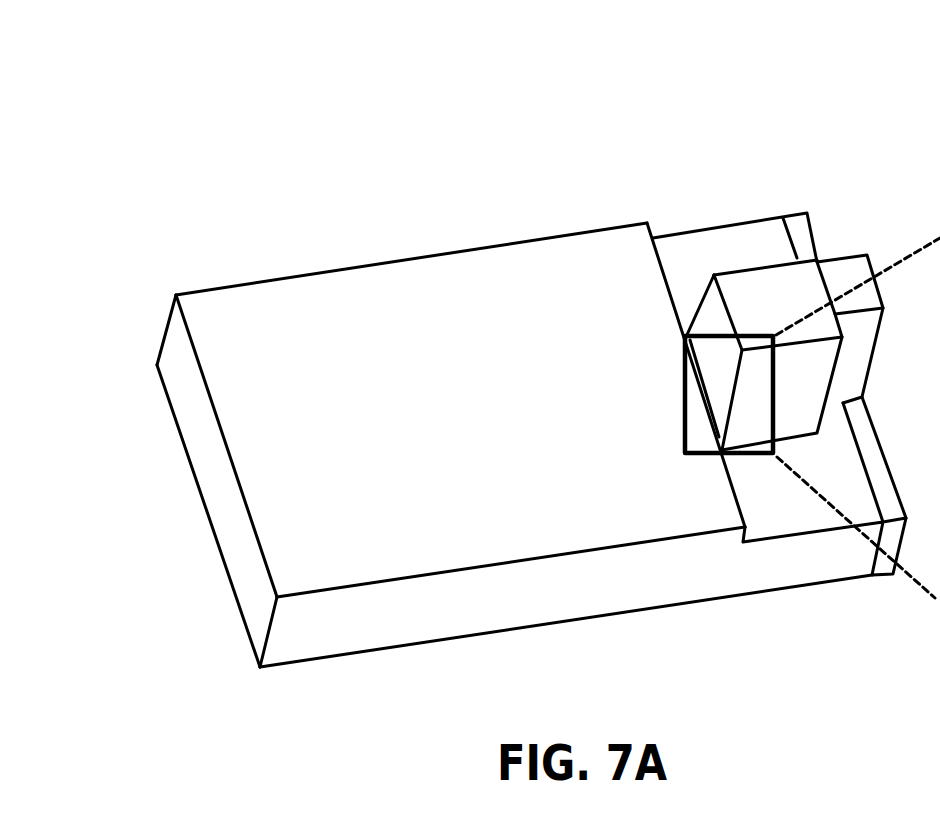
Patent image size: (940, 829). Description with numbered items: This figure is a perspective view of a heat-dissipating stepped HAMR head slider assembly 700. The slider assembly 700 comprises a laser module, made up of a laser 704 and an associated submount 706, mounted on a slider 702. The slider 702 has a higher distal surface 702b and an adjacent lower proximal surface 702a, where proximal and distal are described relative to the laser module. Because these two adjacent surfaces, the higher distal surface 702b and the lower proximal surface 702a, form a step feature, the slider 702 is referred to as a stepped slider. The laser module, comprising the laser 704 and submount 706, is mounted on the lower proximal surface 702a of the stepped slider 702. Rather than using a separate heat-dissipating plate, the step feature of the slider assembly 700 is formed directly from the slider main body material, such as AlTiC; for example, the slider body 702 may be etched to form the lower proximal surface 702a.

The HAMR head slider assembly 700 is at (357, 114).
The slider 702 is at (285, 298).
The lower proximal surface 702a is at (795, 515).
The higher distal surface 702b is at (417, 548).
The laser 704 is at (841, 273).
The submount 706 is at (756, 290).